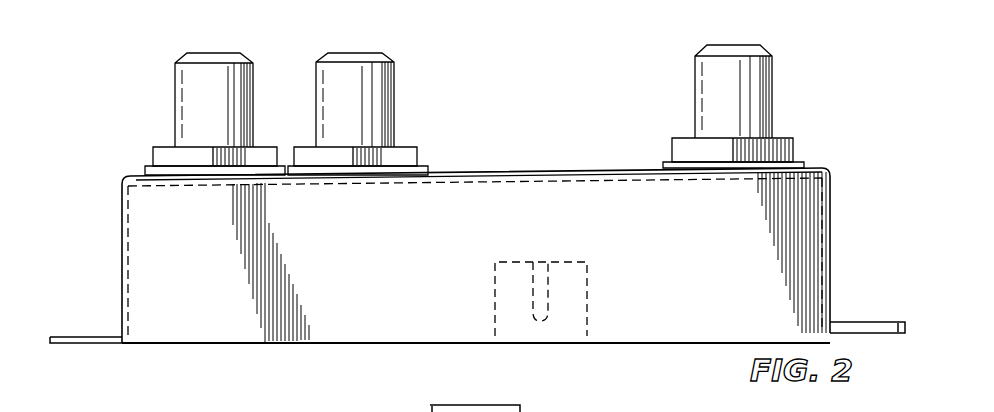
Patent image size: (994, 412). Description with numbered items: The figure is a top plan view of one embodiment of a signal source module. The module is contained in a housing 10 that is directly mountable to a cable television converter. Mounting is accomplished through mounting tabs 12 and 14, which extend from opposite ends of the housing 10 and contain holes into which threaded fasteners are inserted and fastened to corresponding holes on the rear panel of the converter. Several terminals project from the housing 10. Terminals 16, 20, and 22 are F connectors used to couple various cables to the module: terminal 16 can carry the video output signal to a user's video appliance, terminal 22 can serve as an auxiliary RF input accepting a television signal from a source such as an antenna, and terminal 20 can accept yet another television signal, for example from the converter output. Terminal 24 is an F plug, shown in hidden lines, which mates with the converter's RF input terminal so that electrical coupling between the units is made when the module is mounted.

The housing 10 is at (140, 250).
The mounting tab 12 is at (88, 338).
The mounting tab 14 is at (863, 322).
The terminal 16 is at (393, 93).
The terminal 20 is at (253, 75).
The terminal 22 is at (695, 68).
The terminal 24 is at (587, 298).